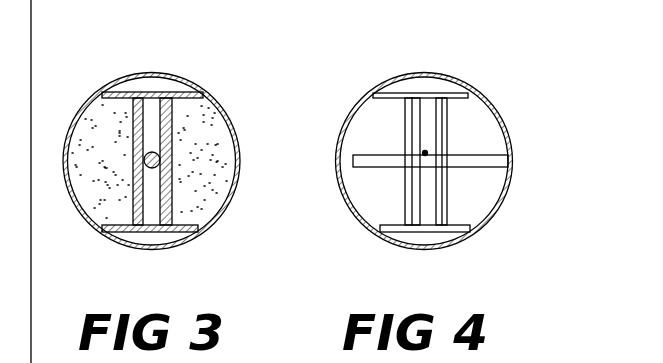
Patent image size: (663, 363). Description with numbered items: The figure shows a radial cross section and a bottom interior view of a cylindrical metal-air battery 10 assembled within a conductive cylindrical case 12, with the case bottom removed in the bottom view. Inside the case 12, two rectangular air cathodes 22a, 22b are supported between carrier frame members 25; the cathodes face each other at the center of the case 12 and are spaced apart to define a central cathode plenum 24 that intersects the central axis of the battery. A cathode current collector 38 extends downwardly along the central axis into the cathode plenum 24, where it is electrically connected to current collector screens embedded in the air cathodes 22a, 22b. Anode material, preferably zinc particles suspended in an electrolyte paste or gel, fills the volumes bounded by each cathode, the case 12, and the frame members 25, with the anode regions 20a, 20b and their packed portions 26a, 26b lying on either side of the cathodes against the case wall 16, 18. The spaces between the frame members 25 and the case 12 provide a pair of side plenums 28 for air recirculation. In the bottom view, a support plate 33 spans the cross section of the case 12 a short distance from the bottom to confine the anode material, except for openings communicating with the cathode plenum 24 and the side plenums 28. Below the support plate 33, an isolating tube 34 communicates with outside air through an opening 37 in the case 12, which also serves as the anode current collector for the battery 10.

In FIG. 3, the cylindrical metal-air battery 10 is at (112, 256).
In FIG. 3, the conductive cylindrical case 12 is at (103, 82).
In FIG. 4, the conductive cylindrical case 12 is at (391, 79).
In FIG. 3, the shell wall 16 is at (73, 127).
In FIG. 3, the shell wall 18 is at (239, 146).
In FIG. 3, the first chamber 20a is at (93, 177).
In FIG. 3, the second chamber 20b is at (195, 118).
In FIG. 3, the air cathode 22a is at (144, 115).
In FIG. 4, the air cathode 22a is at (407, 125).
In FIG. 3, the air cathode 22b is at (167, 113).
In FIG. 4, the air cathode 22b is at (440, 127).
In FIG. 3, the cathode plenum 24 is at (153, 181).
In FIG. 4, the cathode plenum 24 is at (426, 180).
In FIG. 3, the carrier frame member 25 is at (180, 91).
In FIG. 4, the carrier frame member 25 is at (442, 78).
In FIG. 3, the first packing region 26a is at (98, 194).
In FIG. 3, the second packing region 26b is at (208, 193).
In FIG. 3, the side plenum 28 is at (147, 85).
In FIG. 4, the side plenum 28 is at (420, 88).
In FIG. 4, the support plate 33 is at (472, 138).
In FIG. 4, the isolating tube 34 is at (486, 160).
In FIG. 4, the opening 37 is at (510, 162).
In FIG. 3, the cathode current collector 38 is at (144, 162).